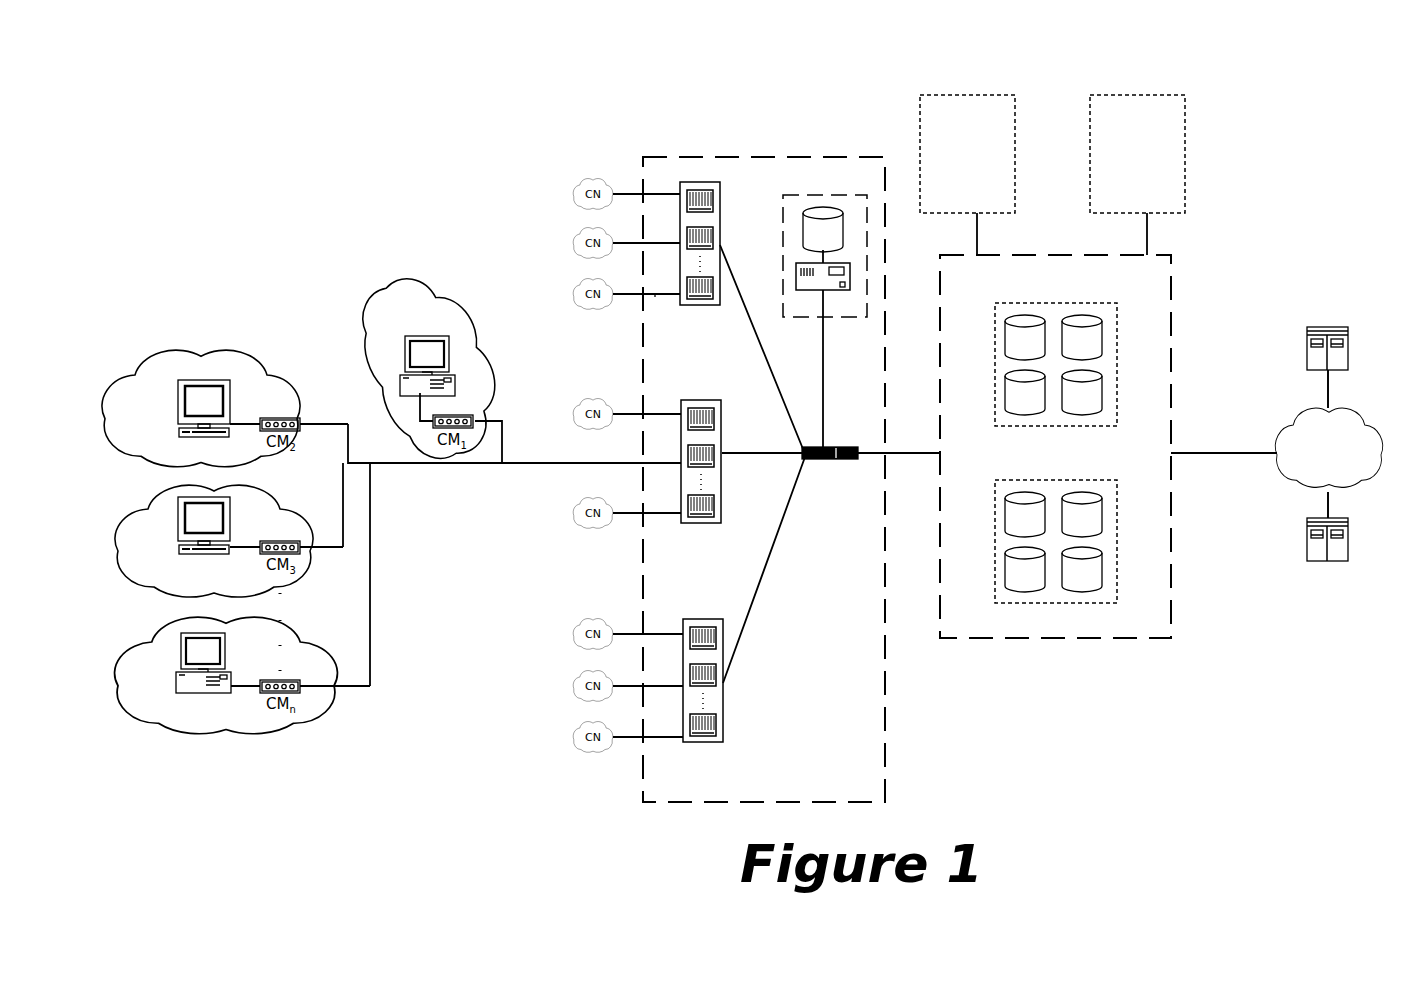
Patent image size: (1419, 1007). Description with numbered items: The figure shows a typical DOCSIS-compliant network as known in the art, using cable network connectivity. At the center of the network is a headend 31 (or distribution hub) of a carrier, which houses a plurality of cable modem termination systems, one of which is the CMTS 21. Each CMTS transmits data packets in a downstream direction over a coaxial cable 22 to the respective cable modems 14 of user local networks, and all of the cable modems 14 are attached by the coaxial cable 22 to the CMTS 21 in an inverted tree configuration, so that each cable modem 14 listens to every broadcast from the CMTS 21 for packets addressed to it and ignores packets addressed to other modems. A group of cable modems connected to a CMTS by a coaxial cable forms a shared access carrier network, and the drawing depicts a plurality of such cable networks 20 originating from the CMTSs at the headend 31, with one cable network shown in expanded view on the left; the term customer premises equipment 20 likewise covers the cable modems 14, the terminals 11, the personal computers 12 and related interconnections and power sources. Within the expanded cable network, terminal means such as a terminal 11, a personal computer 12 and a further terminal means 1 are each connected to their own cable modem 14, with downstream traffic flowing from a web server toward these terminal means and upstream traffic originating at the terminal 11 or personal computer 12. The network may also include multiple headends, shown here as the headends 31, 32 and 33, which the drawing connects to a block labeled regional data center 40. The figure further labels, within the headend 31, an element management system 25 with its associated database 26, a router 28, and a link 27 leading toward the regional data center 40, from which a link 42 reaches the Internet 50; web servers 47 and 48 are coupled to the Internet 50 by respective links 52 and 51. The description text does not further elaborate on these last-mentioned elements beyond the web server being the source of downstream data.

The subscriber computer 1 is at (178, 400).
The terminal 11 is at (178, 520).
The personal computer 12 is at (178, 660).
The cable modem 14 is at (281, 416).
The cable network 20 is at (191, 356).
The cable modem termination system 21 is at (686, 182).
The coaxial cable 22 is at (671, 294).
The element management system (EMS) 25 is at (854, 290).
The EMS database 26 is at (824, 207).
The router link to regional data center 27 is at (894, 453).
The router 28 is at (848, 459).
The headend 31 is at (764, 479).
The headend 32 is at (967, 154).
The headend 33 is at (1137, 154).
The regional data center 40 is at (1055, 446).
The link to internet 42 is at (1196, 453).
The web server 47 is at (1348, 346).
The web server 48 is at (1348, 536).
The internet 50 is at (1328, 447).
The web server link 51 is at (1328, 507).
The web server link 52 is at (1328, 391).